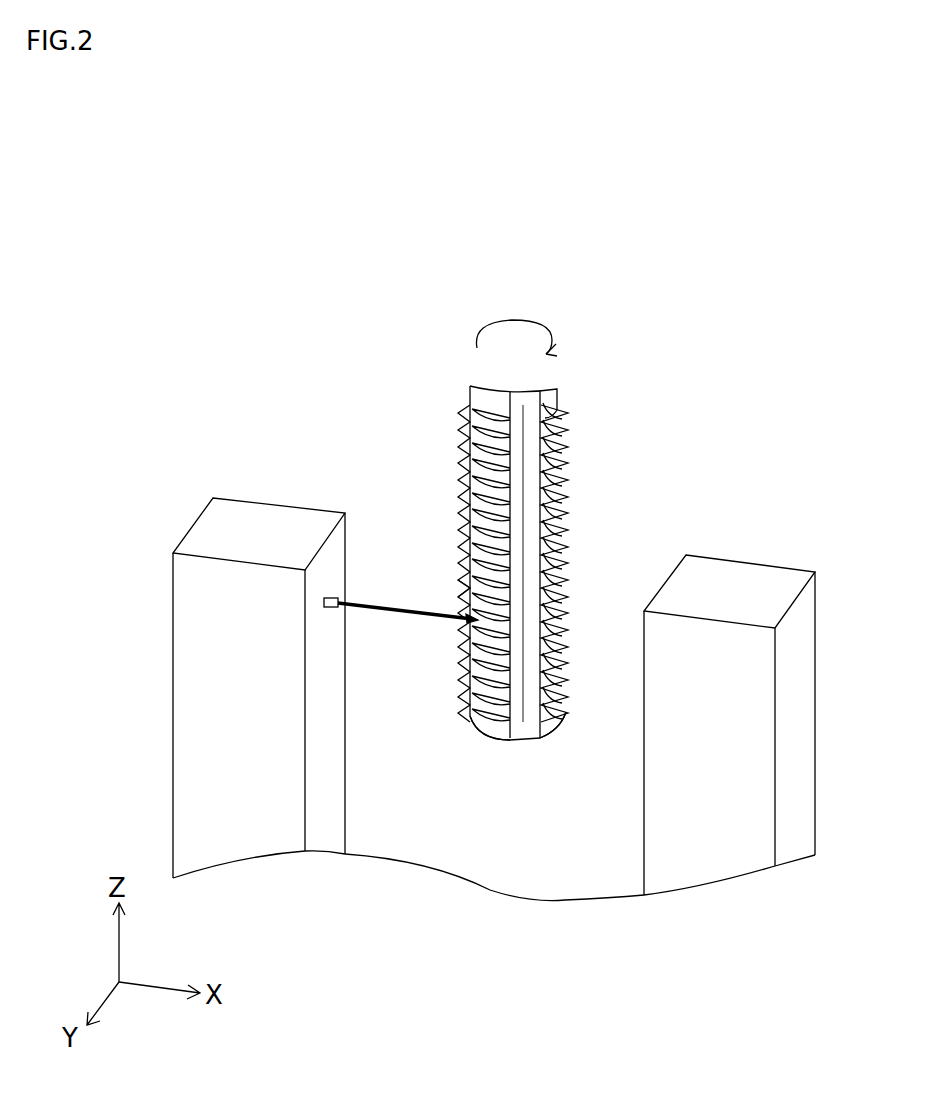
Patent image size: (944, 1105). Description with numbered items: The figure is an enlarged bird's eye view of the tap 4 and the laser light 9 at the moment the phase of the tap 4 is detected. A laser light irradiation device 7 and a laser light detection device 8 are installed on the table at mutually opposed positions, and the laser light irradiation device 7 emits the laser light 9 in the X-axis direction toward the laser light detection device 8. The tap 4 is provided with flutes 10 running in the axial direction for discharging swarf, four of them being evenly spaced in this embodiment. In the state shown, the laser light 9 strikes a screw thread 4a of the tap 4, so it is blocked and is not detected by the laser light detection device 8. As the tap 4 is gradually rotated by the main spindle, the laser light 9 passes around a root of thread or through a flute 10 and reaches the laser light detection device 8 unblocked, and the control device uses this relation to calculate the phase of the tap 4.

The tap 4 is at (548, 397).
The screw thread 4a is at (458, 589).
The laser light irradiation device 7 is at (183, 601).
The laser light detection device 8 is at (795, 636).
The laser light 9 is at (400, 612).
The flute 10 is at (478, 712).